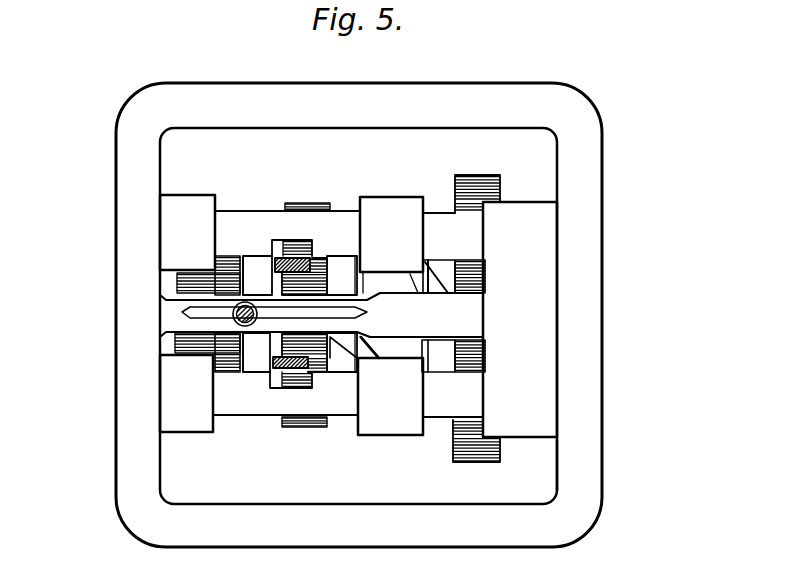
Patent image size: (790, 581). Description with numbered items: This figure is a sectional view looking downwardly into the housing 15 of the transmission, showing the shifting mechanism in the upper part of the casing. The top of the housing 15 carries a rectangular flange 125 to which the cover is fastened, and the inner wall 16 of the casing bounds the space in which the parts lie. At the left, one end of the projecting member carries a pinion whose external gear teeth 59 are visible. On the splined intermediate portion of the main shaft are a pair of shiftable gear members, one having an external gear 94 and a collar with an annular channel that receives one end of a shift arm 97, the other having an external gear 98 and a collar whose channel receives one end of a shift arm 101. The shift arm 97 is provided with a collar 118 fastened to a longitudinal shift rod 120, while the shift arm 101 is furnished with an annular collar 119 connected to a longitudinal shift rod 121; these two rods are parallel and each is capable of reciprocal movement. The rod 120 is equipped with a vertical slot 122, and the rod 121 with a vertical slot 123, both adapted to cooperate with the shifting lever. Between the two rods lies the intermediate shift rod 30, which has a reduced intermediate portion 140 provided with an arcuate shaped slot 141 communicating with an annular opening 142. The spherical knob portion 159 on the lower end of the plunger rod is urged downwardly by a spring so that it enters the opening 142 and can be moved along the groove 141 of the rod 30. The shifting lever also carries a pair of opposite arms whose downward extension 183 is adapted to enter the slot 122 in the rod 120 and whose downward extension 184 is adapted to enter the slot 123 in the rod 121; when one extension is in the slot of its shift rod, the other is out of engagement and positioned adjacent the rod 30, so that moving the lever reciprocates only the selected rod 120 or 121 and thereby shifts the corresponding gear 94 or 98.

The housing 15 is at (609, 283).
The inner casing wall 16 is at (541, 168).
The rectangular flange 125 is at (583, 448).
The external gear teeth 59 is at (204, 275).
The reduced intermediate portion 140 is at (232, 297).
The annular opening 142 is at (247, 323).
The longitudinal shift rod 121 is at (336, 207).
The longitudinal shift rod 120 is at (342, 412).
The downward extension 184 is at (295, 265).
The downward extension 183 is at (327, 357).
The vertical slot 123 is at (276, 241).
The external gear 94 is at (327, 262).
The vertical slot 122 is at (283, 390).
The annular collar 119 is at (388, 203).
The collar 118 is at (398, 428).
The shift arm 101 is at (440, 261).
The shift arm 97 is at (375, 348).
The external gear 98 is at (475, 277).
The shift rod 30 is at (468, 308).
The arcuate shaped slot 141 is at (367, 312).
The knob portion 159 is at (236, 320).